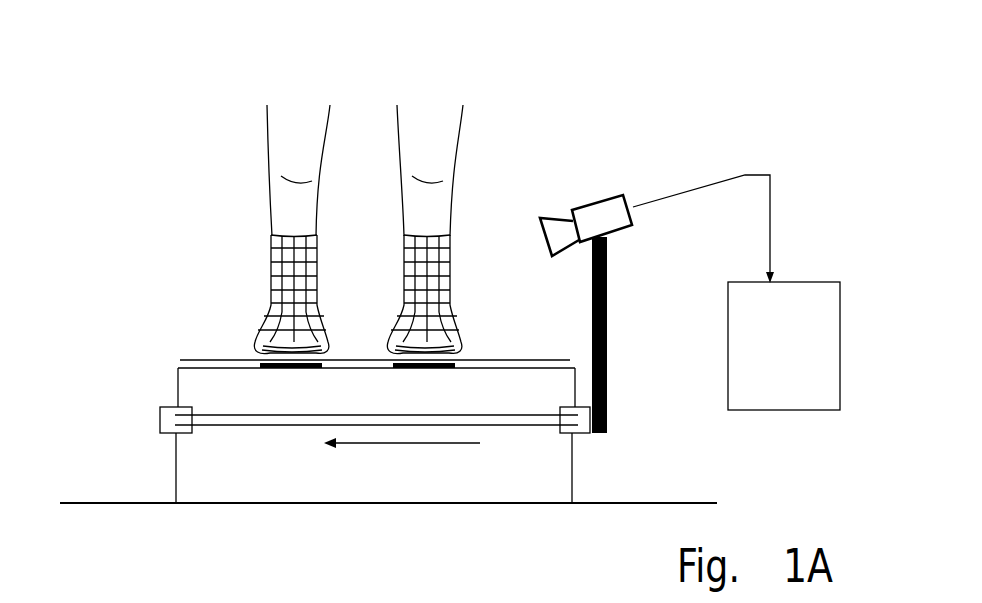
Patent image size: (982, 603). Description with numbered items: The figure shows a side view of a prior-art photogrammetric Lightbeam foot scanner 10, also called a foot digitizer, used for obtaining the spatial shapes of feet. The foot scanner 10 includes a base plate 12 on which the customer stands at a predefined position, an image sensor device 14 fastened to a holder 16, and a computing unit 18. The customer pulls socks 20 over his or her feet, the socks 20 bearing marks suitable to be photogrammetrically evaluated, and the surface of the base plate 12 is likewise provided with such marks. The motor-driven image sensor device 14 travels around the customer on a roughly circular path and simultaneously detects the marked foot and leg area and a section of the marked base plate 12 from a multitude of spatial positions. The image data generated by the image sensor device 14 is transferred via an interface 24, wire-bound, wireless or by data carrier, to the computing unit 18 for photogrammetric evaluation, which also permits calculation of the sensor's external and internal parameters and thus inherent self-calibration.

The foot scanner 10 is at (133, 239).
The base plate 12 is at (180, 360).
The image sensor device 14 is at (598, 208).
The holder 16 is at (607, 330).
The computing unit 18 is at (799, 368).
The socks 20 is at (404, 283).
The interface 24 is at (770, 173).